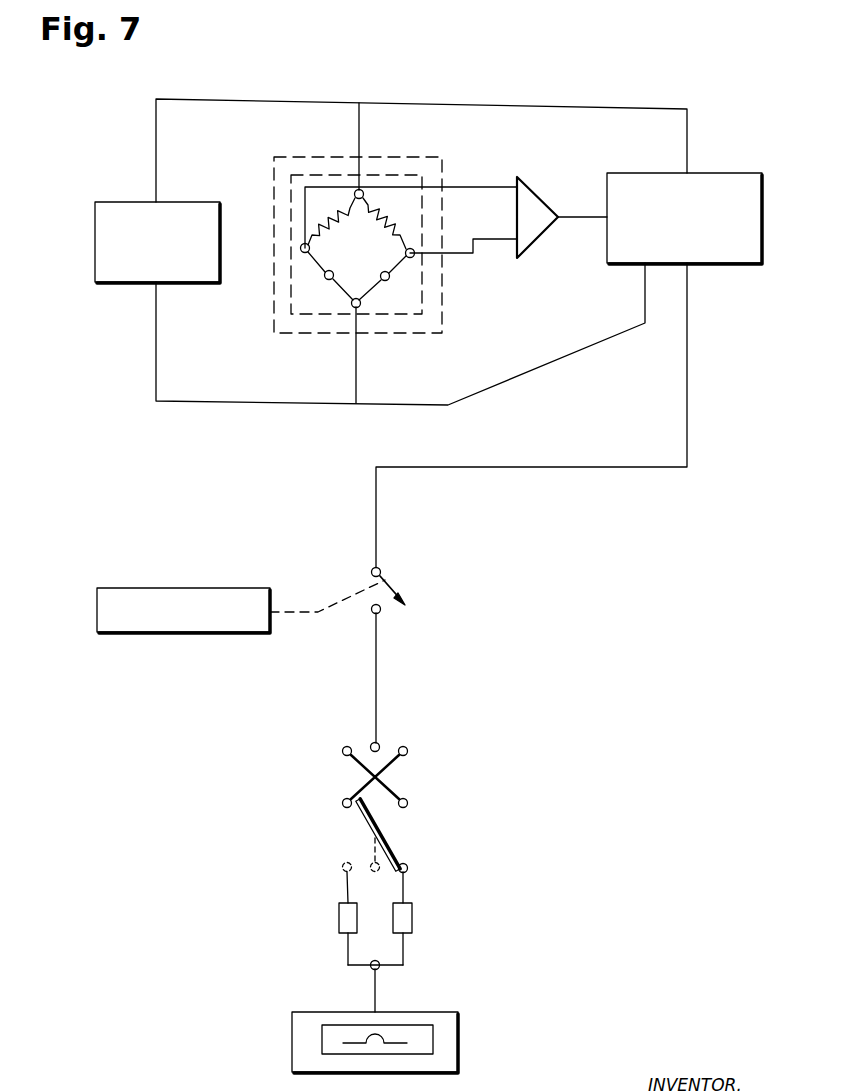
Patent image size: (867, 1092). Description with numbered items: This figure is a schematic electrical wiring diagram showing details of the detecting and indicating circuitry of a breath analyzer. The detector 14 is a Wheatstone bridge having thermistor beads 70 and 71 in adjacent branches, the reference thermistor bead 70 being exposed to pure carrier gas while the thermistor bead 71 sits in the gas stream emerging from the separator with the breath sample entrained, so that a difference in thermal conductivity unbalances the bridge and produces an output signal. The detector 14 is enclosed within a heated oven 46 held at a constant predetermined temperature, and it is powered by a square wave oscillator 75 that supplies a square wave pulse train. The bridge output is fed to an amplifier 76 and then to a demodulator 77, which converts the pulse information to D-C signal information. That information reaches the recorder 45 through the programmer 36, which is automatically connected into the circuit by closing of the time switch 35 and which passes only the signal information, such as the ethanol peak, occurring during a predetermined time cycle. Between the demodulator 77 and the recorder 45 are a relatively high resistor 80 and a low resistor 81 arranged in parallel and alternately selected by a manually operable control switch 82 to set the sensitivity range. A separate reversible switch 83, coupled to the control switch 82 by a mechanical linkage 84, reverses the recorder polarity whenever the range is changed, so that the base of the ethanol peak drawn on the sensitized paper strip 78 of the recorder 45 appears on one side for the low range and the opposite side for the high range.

The square wave oscillator 75 is at (116, 205).
The oven 46 is at (272, 322).
The detector 14 is at (309, 314).
The thermistor bead 70 is at (324, 277).
The thermistor bead 71 is at (389, 281).
The amplifier 76 is at (532, 199).
The demodulator 77 is at (718, 172).
The programmer 36 is at (97, 593).
The time switch 35 is at (390, 586).
The reversible switch 83 is at (354, 757).
The mechanical linkage 84 is at (362, 822).
The control switch 82 is at (391, 851).
The high resistor 80 is at (343, 923).
The low resistor 81 is at (406, 923).
The sensitized paper strip 78 is at (399, 1035).
The recorder 45 is at (395, 1027).